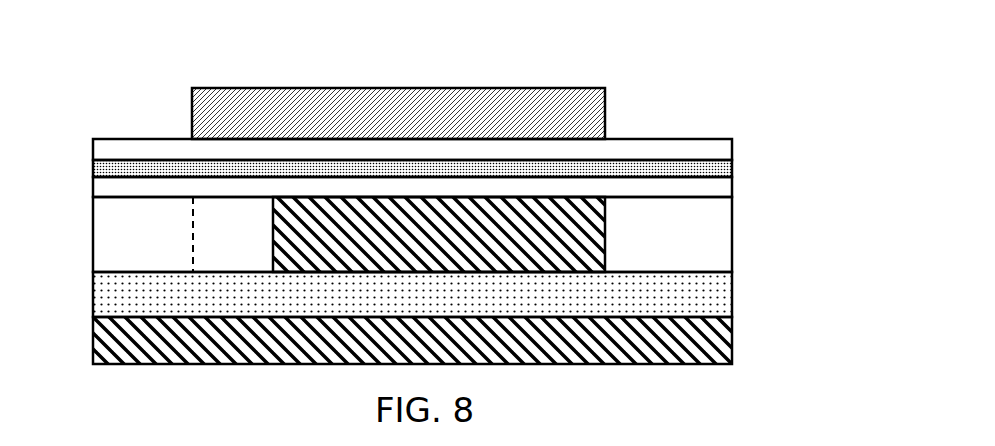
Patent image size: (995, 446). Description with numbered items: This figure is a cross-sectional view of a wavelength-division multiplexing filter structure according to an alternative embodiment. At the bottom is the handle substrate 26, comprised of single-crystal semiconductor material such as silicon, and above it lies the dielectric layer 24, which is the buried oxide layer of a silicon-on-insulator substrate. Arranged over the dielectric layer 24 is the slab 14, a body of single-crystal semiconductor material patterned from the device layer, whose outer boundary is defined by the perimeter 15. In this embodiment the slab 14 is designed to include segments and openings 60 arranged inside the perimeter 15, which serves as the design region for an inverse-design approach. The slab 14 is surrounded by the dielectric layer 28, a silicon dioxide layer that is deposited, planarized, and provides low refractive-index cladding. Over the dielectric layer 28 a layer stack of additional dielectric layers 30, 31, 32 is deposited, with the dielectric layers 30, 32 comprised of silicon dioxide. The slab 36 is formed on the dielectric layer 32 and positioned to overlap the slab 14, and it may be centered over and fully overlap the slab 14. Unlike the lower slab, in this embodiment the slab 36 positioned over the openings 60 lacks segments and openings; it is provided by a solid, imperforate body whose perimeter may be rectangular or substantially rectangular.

The slab 14 is at (572, 232).
The perimeter 15 is at (192, 231).
The dielectric layer 24 is at (120, 300).
The handle substrate 26 is at (115, 350).
The dielectric layer 28 is at (110, 247).
The dielectric layer 30 is at (112, 183).
The dielectric layer 31 is at (713, 172).
The dielectric layer 32 is at (112, 153).
The slab 36 is at (235, 113).
The openings 60 is at (248, 248).